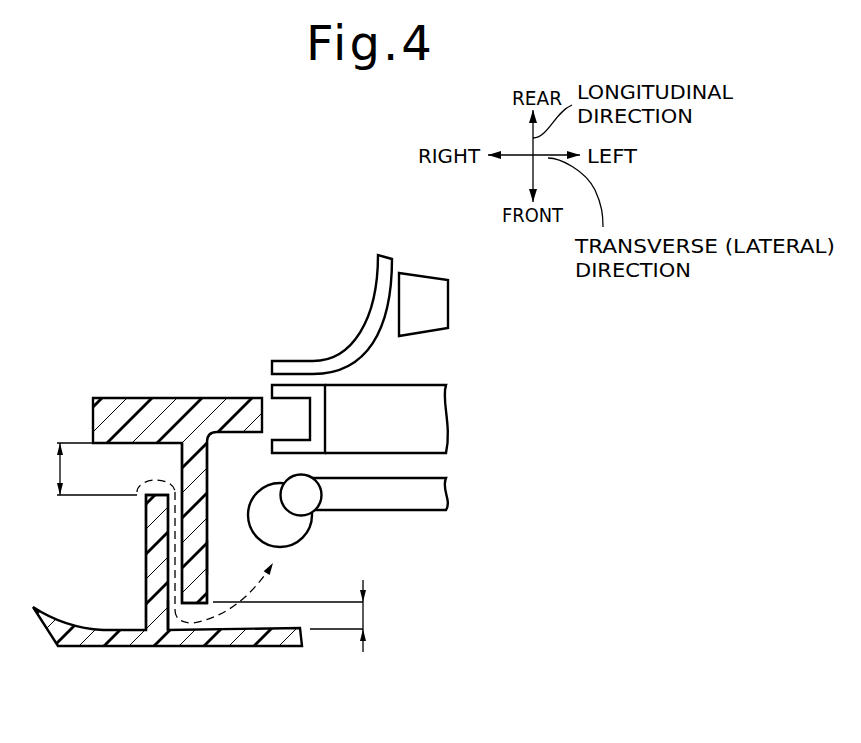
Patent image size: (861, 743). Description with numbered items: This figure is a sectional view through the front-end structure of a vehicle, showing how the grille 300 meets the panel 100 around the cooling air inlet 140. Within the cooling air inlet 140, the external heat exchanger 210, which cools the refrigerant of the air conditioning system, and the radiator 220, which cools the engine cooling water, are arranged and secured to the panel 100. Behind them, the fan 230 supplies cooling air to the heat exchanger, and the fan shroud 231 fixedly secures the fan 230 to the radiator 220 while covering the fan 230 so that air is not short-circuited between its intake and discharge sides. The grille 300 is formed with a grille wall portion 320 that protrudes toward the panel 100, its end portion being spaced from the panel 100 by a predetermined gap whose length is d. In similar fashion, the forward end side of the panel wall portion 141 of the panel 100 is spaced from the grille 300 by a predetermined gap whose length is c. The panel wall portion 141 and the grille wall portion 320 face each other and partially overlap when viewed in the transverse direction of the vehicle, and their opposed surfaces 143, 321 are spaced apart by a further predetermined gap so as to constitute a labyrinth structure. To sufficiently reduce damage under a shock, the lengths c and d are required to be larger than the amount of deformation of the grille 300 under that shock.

The panel 100 is at (173, 396).
The cooling air inlet 140 is at (287, 422).
The panel wall portion 141 is at (205, 495).
The opposed surface 143 is at (207, 555).
The external heat exchanger 210 is at (447, 495).
The radiator 220 is at (447, 420).
The fan 230 is at (430, 308).
The fan shroud 231 is at (347, 340).
The grille 300 is at (280, 647).
The grille wall portion 320 is at (145, 580).
The opposed surface 321 is at (167, 613).
The length of the gap δ5 d is at (88, 469).
The length of the gap δ4 c is at (289, 616).